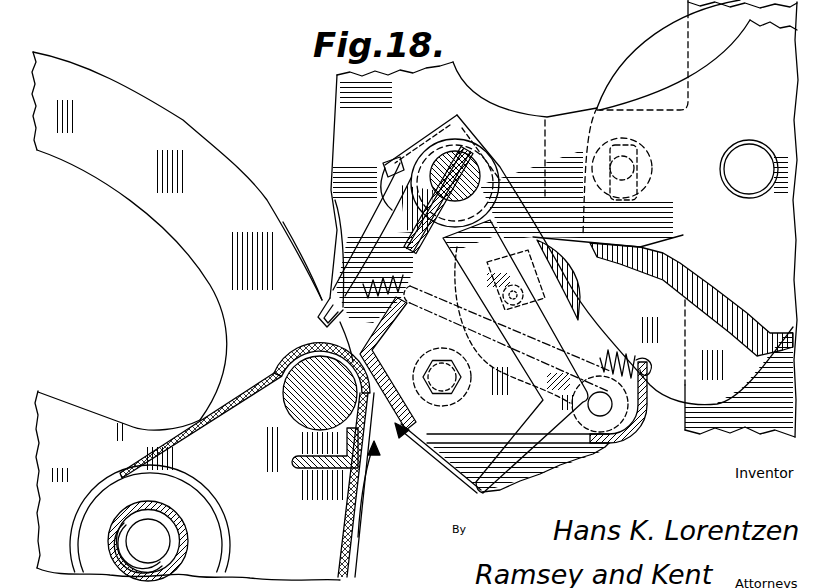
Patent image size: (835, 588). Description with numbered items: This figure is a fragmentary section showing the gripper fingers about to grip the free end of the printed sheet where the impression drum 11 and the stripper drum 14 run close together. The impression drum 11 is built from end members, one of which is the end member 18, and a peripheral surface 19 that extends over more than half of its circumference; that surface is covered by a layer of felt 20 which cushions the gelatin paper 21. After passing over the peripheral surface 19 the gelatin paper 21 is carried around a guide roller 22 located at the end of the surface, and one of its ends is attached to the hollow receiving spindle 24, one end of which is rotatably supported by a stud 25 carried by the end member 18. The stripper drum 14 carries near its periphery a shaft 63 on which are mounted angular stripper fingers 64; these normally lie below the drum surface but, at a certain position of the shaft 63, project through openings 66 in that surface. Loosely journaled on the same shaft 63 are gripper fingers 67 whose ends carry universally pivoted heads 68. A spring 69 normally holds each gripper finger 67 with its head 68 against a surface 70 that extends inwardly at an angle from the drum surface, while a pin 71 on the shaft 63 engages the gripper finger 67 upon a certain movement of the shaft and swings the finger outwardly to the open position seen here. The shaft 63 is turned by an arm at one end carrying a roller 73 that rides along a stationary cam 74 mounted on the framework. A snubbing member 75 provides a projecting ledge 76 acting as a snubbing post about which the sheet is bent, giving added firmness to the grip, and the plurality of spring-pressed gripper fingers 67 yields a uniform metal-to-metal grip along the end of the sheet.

The impression drum 11 is at (188, 128).
The stripper drum 14 is at (330, 105).
The end member 18 is at (187, 485).
The peripheral surface 19 is at (345, 553).
The layer of felt 20 is at (357, 569).
The gelatin paper 21 is at (261, 462).
The guide roller 22 is at (287, 415).
The hollow receiving spindle 24 is at (183, 518).
The stud 25 is at (160, 543).
The shaft 63 is at (433, 162).
The angular stripper finger 64 is at (527, 443).
The opening 66 is at (445, 468).
The gripper finger 67 is at (360, 208).
The head 68 is at (337, 339).
The spring 69 is at (614, 356).
The surface 70 is at (395, 327).
The pin 71 is at (476, 165).
The roller 73 is at (572, 273).
The stationary cam 74 is at (647, 55).
The snubbing member 75 is at (385, 489).
The projecting ledge 76 is at (330, 348).